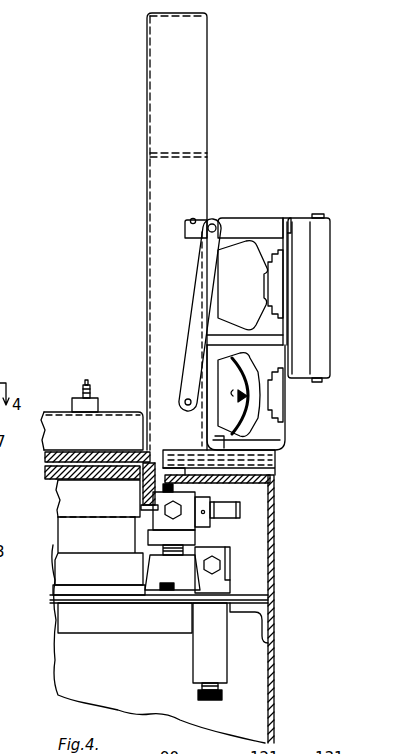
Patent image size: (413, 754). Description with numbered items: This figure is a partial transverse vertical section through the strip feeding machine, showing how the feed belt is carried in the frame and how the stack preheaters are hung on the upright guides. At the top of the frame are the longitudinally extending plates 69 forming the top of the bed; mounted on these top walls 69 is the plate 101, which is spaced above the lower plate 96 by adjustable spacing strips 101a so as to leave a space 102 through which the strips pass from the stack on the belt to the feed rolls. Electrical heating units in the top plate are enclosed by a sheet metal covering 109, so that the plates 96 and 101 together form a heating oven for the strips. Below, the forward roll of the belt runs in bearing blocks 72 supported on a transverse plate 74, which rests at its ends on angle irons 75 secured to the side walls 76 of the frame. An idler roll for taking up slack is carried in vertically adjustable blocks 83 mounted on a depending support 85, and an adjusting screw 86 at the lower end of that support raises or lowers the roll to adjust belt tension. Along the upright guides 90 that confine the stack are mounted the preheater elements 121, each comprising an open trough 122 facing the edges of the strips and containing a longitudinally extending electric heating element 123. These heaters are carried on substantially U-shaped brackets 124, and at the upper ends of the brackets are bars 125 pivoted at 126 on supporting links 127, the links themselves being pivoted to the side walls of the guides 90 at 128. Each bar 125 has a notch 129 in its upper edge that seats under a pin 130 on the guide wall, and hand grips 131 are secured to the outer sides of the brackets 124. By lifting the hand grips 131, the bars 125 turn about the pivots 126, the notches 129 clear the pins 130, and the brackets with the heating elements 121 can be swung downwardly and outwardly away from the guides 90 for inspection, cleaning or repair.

The longitudinally extending plates 69 is at (240, 477).
The bearing blocks 72 is at (178, 570).
The transverse plate 74 is at (116, 598).
The angle irons 75 is at (244, 612).
The side walls 76 is at (276, 584).
The vertically adjustable blocks 83 is at (215, 583).
The depending support 85 is at (196, 652).
The adjusting screw 86 is at (198, 700).
The upright guides 90 is at (137, 210).
The plate 96 is at (48, 482).
The plate 101 is at (46, 458).
The adjustable spacing strips 101a is at (126, 486).
The space 102 is at (40, 468).
The sheet metal covering 109 is at (50, 408).
The preheater elements 121 is at (226, 300).
The open trough 122 is at (255, 378).
The electric heating element 123 is at (236, 389).
The U-shaped brackets 124 is at (286, 400).
The bars 125 is at (252, 228).
The pivot 126 is at (214, 223).
The supporting links 127 is at (193, 297).
The pivot 128 is at (184, 402).
The notch 129 is at (191, 225).
The pins 130 is at (194, 218).
The hand grips 131 is at (323, 240).